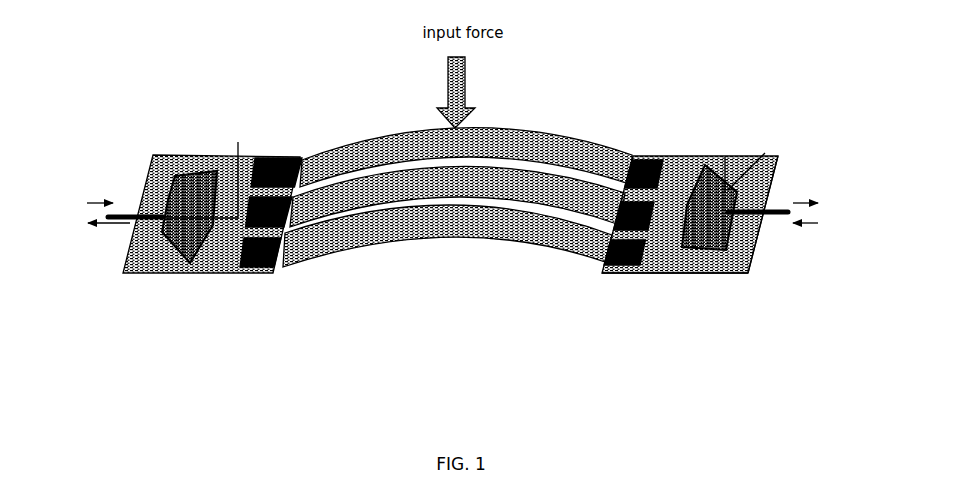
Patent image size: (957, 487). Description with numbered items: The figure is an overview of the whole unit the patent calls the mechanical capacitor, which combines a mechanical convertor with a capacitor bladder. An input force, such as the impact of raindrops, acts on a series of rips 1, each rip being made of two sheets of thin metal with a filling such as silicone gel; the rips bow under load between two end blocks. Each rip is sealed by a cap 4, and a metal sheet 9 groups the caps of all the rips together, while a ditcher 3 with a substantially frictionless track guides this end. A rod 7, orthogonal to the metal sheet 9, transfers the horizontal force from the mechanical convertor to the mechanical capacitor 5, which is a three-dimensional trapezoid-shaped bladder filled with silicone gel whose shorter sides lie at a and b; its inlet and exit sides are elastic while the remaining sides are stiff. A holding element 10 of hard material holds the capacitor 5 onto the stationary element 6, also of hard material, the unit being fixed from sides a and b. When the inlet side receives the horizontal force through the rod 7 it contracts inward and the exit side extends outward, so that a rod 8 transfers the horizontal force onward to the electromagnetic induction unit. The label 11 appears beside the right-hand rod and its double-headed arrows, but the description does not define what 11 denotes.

The rips 1 is at (343, 147).
The ditcher 3 is at (669, 157).
The cap 4 is at (590, 253).
The mechanical capacitor 5 is at (717, 157).
The stationary element 6 is at (757, 157).
The rod 7 is at (238, 142).
The rod 8 is at (768, 215).
The metal sheet 9 is at (200, 273).
The holding element 10 is at (122, 258).
The right output shaft displacement 11 is at (788, 213).
The shorter side a is at (765, 153).
The shorter side b is at (703, 250).